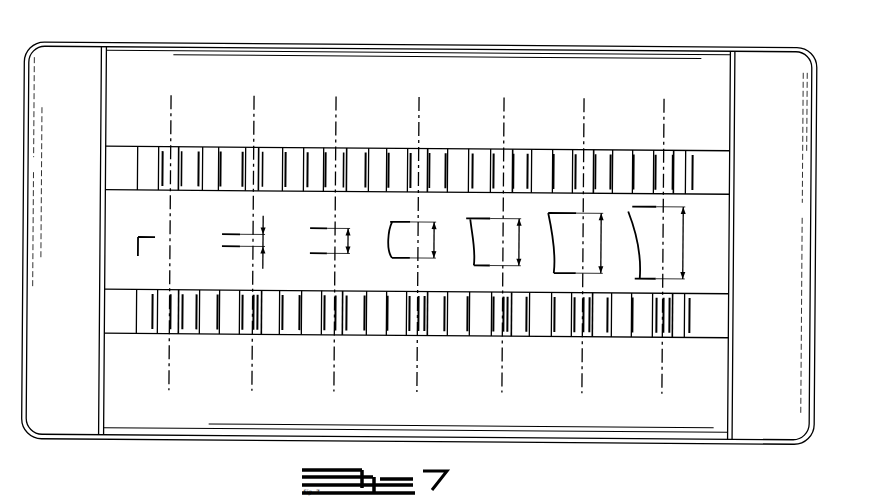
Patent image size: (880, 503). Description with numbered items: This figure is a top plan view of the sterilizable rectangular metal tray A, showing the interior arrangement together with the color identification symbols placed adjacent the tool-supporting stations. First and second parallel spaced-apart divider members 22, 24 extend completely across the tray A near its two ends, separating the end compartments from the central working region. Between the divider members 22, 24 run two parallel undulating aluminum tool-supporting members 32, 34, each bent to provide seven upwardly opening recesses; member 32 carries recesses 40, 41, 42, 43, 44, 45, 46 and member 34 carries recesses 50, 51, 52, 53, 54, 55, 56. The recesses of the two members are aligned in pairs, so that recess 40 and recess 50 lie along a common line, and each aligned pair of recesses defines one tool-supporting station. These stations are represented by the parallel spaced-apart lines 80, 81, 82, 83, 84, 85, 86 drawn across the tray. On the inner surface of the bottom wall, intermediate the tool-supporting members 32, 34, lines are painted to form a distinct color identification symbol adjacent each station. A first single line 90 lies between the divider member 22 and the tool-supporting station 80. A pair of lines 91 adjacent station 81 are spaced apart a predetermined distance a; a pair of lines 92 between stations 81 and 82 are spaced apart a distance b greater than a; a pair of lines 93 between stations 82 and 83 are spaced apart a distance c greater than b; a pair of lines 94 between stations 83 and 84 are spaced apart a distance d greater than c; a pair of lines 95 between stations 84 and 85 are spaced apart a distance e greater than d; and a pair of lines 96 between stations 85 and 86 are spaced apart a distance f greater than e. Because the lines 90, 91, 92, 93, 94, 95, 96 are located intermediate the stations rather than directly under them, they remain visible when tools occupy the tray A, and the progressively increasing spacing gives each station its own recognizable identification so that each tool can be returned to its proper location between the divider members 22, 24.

The tray A is at (777, 43).
The first divider member 22 is at (97, 370).
The second divider member 24 is at (734, 348).
The tool-supporting member 32 is at (142, 124).
The tool-supporting member 34 is at (155, 336).
The recess 40 is at (176, 148).
The recess 41 is at (255, 148).
The recess 42 is at (339, 148).
The recess 43 is at (422, 148).
The recess 44 is at (507, 148).
The recess 45 is at (590, 148).
The recess 46 is at (671, 148).
The recess 50 is at (172, 336).
The recess 51 is at (255, 336).
The recess 52 is at (339, 336).
The recess 53 is at (422, 336).
The recess 54 is at (506, 336).
The recess 55 is at (587, 336).
The recess 56 is at (666, 336).
The tool-supporting station 80 is at (172, 100).
The tool-supporting station 81 is at (254, 100).
The tool-supporting station 82 is at (336, 99).
The tool-supporting station 83 is at (419, 99).
The tool-supporting station 84 is at (504, 99).
The tool-supporting station 85 is at (584, 99).
The tool-supporting station 86 is at (664, 99).
The first line 90 is at (138, 258).
The pair of lines 91 is at (224, 240).
The pair of lines 92 is at (310, 229).
The pair of lines 93 is at (392, 222).
The pair of lines 94 is at (470, 218).
The pair of lines 95 is at (549, 212).
The pair of lines 96 is at (634, 205).
The predetermined distance a is at (264, 250).
The predetermined distance b is at (349, 250).
The predetermined distance c is at (435, 258).
The predetermined distance d is at (520, 248).
The predetermined distance e is at (602, 248).
The predetermined distance f is at (684, 248).